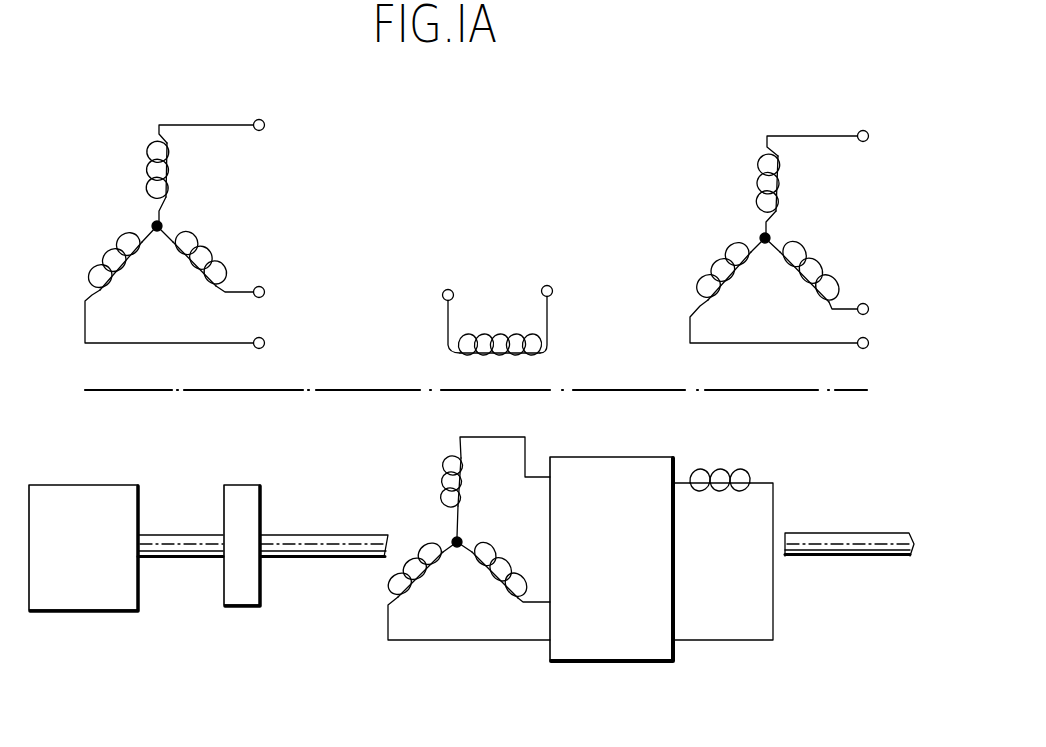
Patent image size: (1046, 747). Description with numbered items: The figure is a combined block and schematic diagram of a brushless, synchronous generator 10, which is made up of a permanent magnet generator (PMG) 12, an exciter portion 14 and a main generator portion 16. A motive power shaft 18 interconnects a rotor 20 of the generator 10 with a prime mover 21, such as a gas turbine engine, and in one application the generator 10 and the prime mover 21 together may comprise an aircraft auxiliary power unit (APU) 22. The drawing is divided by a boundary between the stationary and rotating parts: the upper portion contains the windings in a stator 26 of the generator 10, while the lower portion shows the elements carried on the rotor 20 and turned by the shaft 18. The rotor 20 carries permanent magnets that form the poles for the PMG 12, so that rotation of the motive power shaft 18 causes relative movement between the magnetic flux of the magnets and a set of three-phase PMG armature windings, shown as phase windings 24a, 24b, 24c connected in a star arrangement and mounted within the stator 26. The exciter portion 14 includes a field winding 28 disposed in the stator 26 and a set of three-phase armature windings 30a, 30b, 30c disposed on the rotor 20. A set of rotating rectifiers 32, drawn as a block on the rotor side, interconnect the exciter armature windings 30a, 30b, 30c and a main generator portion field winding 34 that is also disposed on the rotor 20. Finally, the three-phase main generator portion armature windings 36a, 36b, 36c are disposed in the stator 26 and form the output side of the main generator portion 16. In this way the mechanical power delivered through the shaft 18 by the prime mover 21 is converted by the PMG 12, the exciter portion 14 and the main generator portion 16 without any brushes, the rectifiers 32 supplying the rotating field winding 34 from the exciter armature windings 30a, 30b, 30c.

The brushless synchronous generator 10 is at (470, 418).
The permanent magnet generator (PMG) 12 is at (170, 234).
The exciter portion 14 is at (465, 288).
The main generator portion 16 is at (738, 240).
The motive power shaft 18 is at (178, 548).
The rotor 20 is at (419, 573).
The prime mover 21 is at (71, 600).
The aircraft auxiliary power unit (APU) 22 is at (250, 485).
The PMG armature phase winding 24a is at (150, 172).
The PMG armature phase winding 24b is at (212, 256).
The PMG armature phase winding 24c is at (117, 250).
The stator 26 is at (88, 369).
The exciter field winding 28 is at (458, 352).
The exciter armature winding 30a is at (452, 470).
The exciter armature winding 30b is at (500, 565).
The exciter armature winding 30c is at (393, 585).
The rotating rectifiers 32 is at (557, 640).
The main generator portion field winding 34 is at (710, 470).
The main generator portion armature winding 36a is at (762, 170).
The main generator portion armature winding 36b is at (802, 265).
The main generator portion armature winding 36c is at (733, 258).